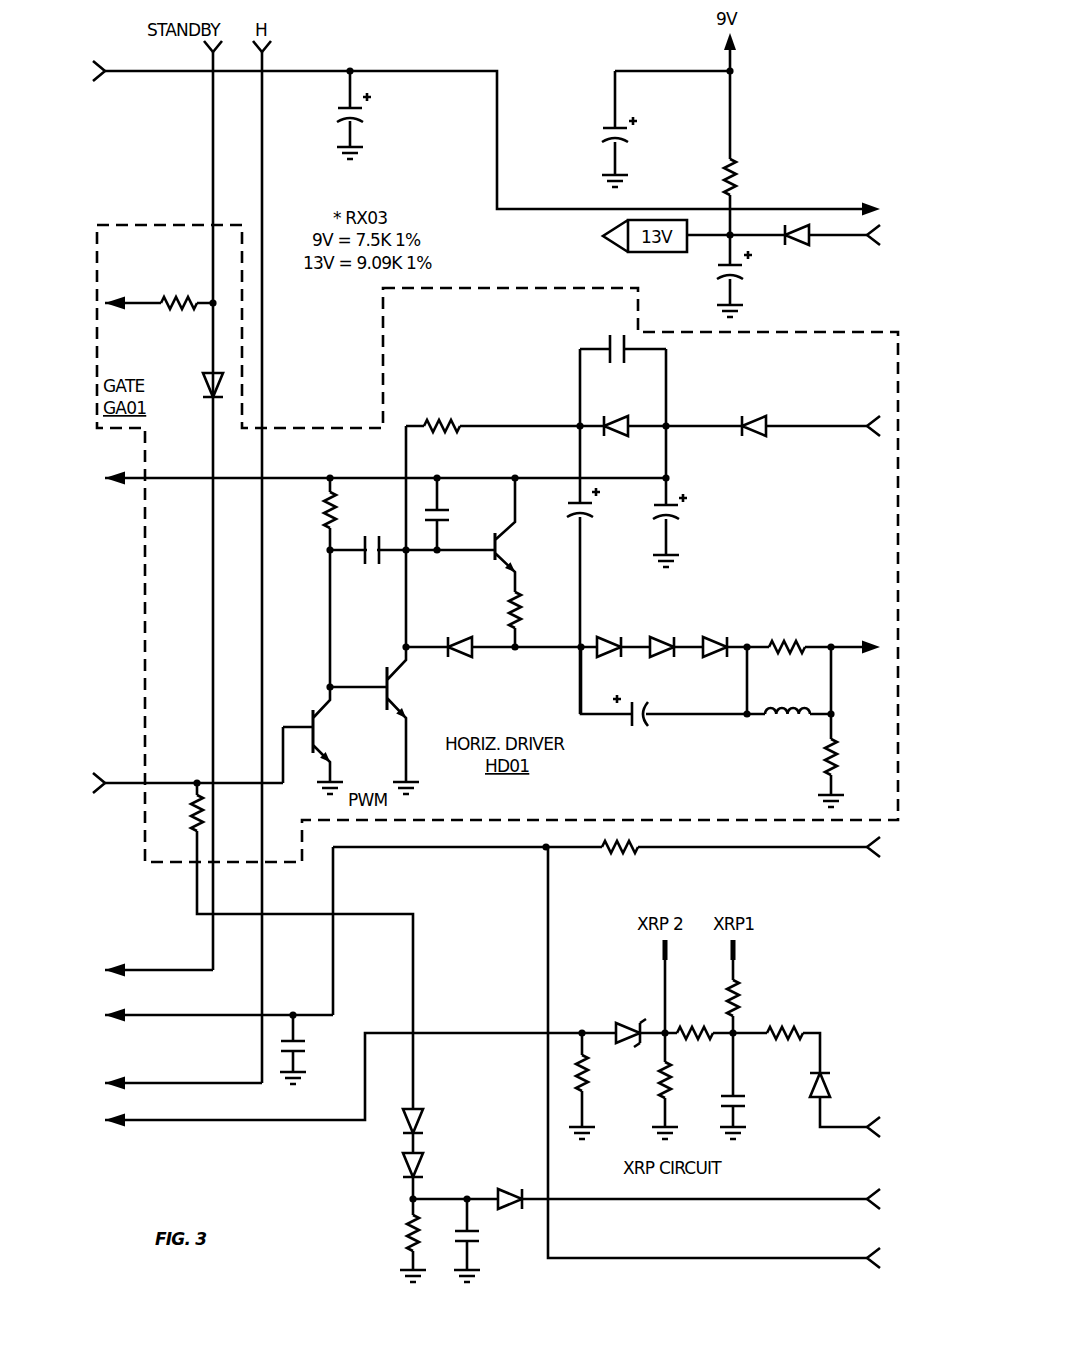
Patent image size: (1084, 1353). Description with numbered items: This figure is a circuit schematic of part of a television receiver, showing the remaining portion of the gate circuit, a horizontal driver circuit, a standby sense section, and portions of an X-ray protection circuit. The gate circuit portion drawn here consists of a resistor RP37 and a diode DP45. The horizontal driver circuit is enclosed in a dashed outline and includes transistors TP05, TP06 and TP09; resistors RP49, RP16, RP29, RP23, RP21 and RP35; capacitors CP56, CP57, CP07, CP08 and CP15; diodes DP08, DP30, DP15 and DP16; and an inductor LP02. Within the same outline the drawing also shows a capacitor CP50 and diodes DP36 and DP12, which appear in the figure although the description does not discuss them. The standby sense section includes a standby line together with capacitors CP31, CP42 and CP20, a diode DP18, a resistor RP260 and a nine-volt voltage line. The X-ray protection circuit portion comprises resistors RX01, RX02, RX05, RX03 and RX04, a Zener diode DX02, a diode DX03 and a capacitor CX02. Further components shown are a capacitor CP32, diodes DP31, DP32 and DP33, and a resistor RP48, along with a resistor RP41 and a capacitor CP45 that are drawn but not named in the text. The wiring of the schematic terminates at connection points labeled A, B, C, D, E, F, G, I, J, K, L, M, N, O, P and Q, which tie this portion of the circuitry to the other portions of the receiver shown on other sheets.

The capacitor CP31 is at (329, 114).
The capacitor CP42 is at (592, 137).
The resistor RP260 is at (701, 172).
The capacitor CP20 is at (702, 286).
The diode DP18 is at (806, 263).
The resistor RP37 is at (173, 280).
The diode DP45 is at (191, 392).
The resistor RP29 is at (440, 403).
The capacitor CP50 1n CP50 is at (598, 334).
The diode DP36 BA157 DP36 is at (614, 405).
The diode DP12 BA157 DP12 is at (756, 405).
The resistor RP16 is at (304, 513).
The capacitor CP56 is at (372, 575).
The capacitor CP57 is at (463, 516).
The capacitor CP07 is at (605, 525).
The capacitor CP15 is at (694, 519).
The transistor TP09 is at (533, 550).
The resistor RP23 is at (538, 612).
The diode DP08 is at (460, 621).
The transistor TP06 is at (427, 689).
The transistor TP05 is at (357, 731).
The diode DP30 is at (650, 622).
The diode DP15 is at (662, 622).
The diode DP16 is at (716, 622).
The resistor RP21 is at (785, 620).
The capacitor CP08 is at (641, 735).
The inductor LP02 is at (787, 685).
The resistor RP35 is at (805, 756).
The resistor RP49 is at (179, 817).
The resistor RP41 2.2K RP41 is at (623, 871).
The capacitor CP32 is at (317, 1057).
The diode DP33 is at (438, 1121).
The diode DP32 is at (386, 1163).
The diode DP31 is at (506, 1172).
The resistor RP48 is at (388, 1229).
The capacitor CP45 100n CP45 is at (490, 1240).
The Zener diode DX02 is at (605, 1010).
The resistor RX01 is at (607, 1077).
The resistor RX03 is at (698, 1014).
The resistor RX02 is at (690, 1089).
The resistor RX04 is at (761, 995).
The resistor RX05 is at (781, 1056).
The capacitor CX02 is at (759, 1112).
The diode DX03 is at (847, 1078).
The terminal A is at (114, 66).
The terminal B is at (128, 300).
The terminal C is at (122, 478).
The terminal D is at (113, 782).
The terminal E is at (122, 968).
The terminal F is at (122, 1014).
The terminal G is at (124, 1082).
The terminal I is at (124, 1119).
The terminal J is at (853, 208).
The terminal K is at (868, 240).
The terminal L is at (866, 426).
The terminal M is at (868, 645).
The terminal N is at (872, 852).
The terminal O is at (866, 1199).
The terminal P is at (868, 1131).
The terminal Q is at (868, 1258).